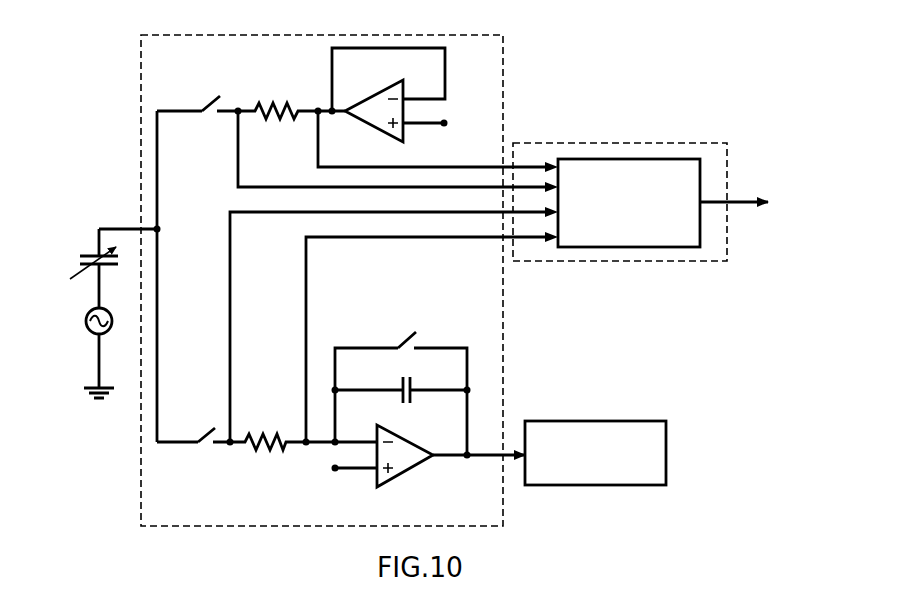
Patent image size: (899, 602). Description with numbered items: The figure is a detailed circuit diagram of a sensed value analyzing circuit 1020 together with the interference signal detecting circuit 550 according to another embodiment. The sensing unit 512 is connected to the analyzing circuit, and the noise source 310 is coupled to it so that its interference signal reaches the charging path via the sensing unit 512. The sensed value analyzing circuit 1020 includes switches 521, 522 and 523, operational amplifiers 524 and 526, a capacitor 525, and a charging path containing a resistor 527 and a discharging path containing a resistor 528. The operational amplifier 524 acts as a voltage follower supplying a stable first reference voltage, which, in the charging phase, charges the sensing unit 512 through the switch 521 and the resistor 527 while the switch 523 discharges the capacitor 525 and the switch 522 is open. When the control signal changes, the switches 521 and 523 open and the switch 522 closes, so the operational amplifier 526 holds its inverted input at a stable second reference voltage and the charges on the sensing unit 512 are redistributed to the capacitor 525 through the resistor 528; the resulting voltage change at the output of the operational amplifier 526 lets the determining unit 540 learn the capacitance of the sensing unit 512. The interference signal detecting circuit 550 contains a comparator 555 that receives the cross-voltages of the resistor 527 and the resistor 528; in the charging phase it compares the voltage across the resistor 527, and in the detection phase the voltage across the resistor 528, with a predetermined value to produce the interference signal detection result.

The sensed value analyzing circuit 1020 is at (141, 127).
The sensing unit 512 is at (70, 260).
The noise source 310 is at (76, 316).
The switch 521 is at (204, 96).
The switch 522 is at (198, 458).
The switch 523 is at (399, 336).
The operational amplifier 524 is at (384, 88).
The capacitor 525 is at (422, 375).
The operational amplifier 526 is at (412, 470).
The resistor 527 is at (282, 96).
The resistor 528 is at (262, 458).
The interference signal detecting circuit 550 is at (673, 143).
The comparator 555 is at (707, 203).
The determining unit 540 is at (606, 421).